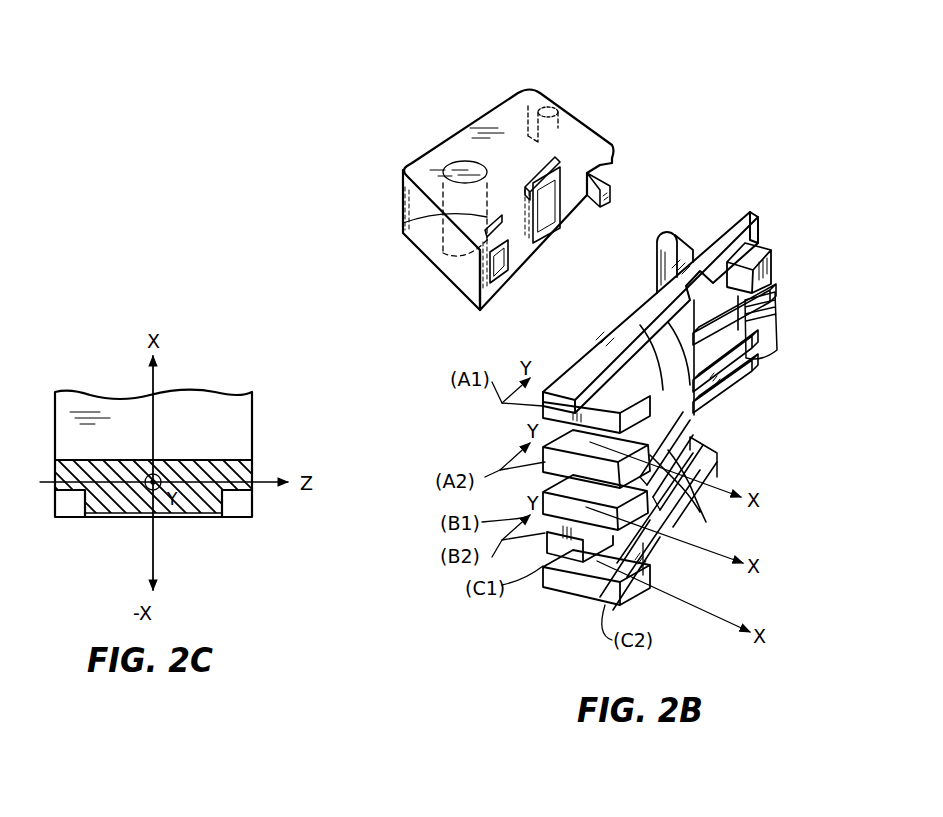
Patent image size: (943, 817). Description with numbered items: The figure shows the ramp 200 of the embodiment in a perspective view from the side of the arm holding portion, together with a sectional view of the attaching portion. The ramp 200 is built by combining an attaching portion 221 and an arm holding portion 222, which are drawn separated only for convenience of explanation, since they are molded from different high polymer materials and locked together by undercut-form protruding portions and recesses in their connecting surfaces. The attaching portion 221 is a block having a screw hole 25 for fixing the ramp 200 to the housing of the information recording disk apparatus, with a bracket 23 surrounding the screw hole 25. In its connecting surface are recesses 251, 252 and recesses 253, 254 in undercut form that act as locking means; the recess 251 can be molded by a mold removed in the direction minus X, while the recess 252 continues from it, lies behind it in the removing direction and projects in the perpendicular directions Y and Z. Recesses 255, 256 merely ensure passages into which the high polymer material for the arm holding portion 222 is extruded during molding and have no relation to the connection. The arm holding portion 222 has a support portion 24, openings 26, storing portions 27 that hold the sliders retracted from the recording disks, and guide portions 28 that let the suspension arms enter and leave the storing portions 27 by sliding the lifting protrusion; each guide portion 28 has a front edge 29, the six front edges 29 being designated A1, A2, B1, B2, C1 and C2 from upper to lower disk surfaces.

In FIG. 2B, the ramp 200 is at (687, 44).
In FIG. 2B, the attaching portion 221 is at (638, 84).
In FIG. 2B, the arm holding portion 222 is at (758, 134).
In FIG. 2C, the bracket 23 is at (232, 402).
In FIG. 2B, the bracket 23 is at (417, 170).
In FIG. 2B, the support portion 24 is at (742, 218).
In FIG. 2B, the screw hole 25 is at (453, 168).
In FIG. 2B, the openings 26 is at (655, 515).
In FIG. 2B, the storing portions 27 is at (728, 303).
In FIG. 2B, the guide portions 28 is at (647, 330).
In FIG. 2B, the front edge 29 is at (588, 488).
In FIG. 2C, the recess 251 is at (202, 518).
In FIG. 2B, the recess 251 is at (504, 268).
In FIG. 2C, the recess 252 is at (240, 462).
In FIG. 2B, the recess 252 is at (403, 223).
In FIG. 2B, the recess 253 is at (543, 212).
In FIG. 2B, the recess 254 is at (533, 167).
In FIG. 2B, the recess 255 is at (607, 176).
In FIG. 2B, the recess 256 is at (542, 112).